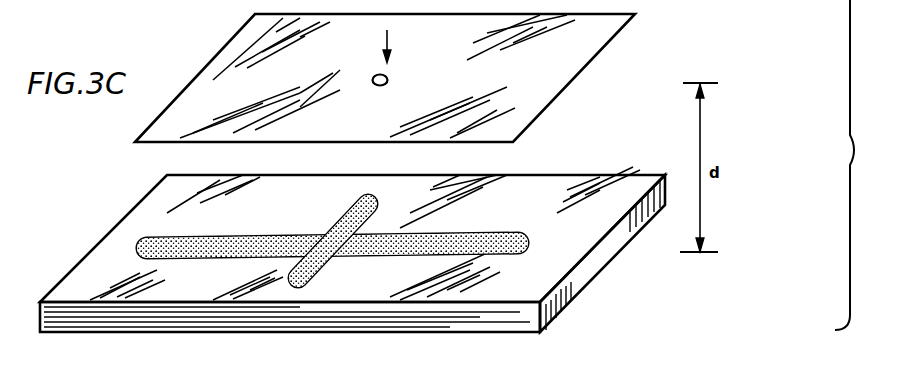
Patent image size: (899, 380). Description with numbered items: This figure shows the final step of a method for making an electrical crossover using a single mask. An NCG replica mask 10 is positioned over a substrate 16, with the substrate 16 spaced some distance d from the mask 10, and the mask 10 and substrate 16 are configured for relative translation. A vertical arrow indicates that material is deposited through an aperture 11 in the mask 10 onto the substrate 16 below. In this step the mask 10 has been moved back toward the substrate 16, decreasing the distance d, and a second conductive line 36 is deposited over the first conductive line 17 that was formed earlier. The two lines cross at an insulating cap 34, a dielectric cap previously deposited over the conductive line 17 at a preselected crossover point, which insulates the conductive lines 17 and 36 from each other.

The NCG replica mask 10 is at (605, 58).
The aperture 11 is at (388, 82).
The substrate 16 is at (602, 268).
The line of conductive material 17 is at (488, 234).
The insulating cap 34 is at (318, 224).
The second conductive line 36 is at (361, 200).